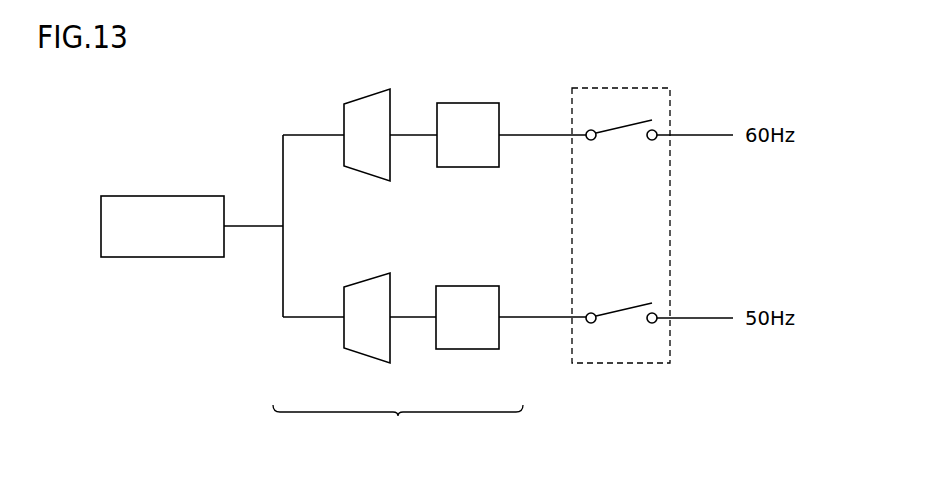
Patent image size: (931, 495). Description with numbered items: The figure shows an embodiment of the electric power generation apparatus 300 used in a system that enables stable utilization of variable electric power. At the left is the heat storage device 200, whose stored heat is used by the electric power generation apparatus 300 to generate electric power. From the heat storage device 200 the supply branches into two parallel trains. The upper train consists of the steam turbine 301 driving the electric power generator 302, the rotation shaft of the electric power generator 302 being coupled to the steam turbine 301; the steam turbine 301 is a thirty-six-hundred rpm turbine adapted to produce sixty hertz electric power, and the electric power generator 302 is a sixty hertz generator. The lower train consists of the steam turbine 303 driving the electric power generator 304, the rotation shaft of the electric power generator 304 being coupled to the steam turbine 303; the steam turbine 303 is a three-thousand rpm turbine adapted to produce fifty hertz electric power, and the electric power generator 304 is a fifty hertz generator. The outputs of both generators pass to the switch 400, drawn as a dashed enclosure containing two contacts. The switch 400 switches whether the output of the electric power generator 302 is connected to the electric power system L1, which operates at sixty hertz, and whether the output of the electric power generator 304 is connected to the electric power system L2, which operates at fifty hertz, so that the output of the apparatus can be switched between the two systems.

The heat storage device 200 is at (158, 258).
The electric power generation apparatus 300 is at (398, 424).
The steam turbine 301 is at (369, 93).
The electric power generator 302 is at (470, 103).
The steam turbine 303 is at (368, 277).
The electric power generator 304 is at (470, 285).
The switch 400 is at (620, 365).
The electric power system L1 is at (704, 133).
The electric power system L2 is at (704, 316).